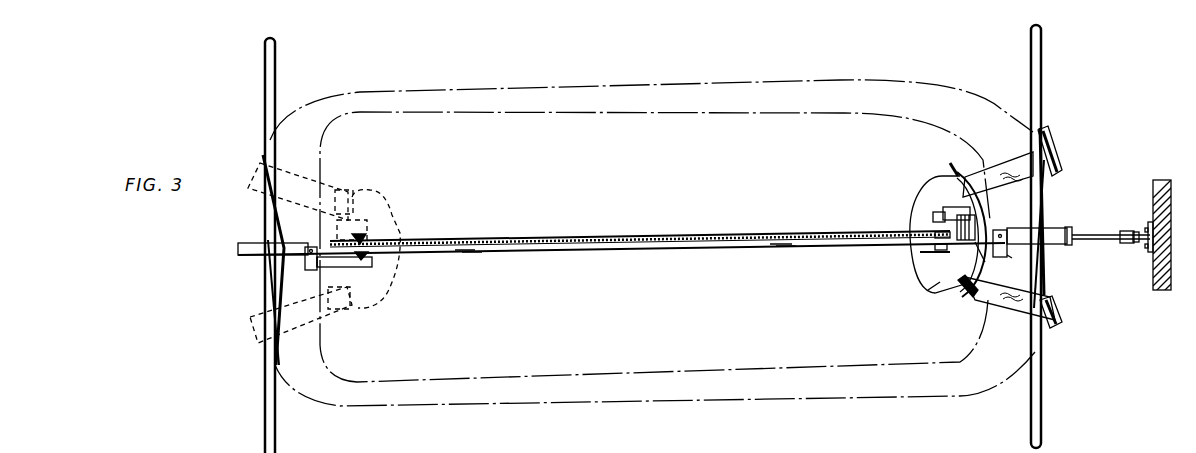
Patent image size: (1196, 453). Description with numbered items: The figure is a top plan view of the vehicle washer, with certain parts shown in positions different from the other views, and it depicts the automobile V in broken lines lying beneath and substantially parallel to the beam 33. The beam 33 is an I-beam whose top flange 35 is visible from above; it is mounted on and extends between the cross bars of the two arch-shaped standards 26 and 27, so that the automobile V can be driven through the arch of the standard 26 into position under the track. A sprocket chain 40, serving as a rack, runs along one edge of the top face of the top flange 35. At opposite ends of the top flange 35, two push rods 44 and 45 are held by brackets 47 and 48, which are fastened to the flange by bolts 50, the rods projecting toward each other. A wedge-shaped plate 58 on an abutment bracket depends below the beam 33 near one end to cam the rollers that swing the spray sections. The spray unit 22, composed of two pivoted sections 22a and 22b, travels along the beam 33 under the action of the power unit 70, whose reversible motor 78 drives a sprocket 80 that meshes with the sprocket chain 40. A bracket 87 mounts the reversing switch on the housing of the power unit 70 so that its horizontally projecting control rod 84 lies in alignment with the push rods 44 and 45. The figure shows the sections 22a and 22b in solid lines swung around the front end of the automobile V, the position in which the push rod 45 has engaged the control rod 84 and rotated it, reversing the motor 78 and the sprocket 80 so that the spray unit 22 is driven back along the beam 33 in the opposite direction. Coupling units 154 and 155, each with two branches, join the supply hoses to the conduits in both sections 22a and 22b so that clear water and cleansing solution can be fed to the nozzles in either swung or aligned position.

The automobile V is at (760, 118).
The spray unit 22 is at (922, 186).
The section of spray unit 22a is at (990, 312).
The section of spray unit 22b is at (1015, 160).
The arch-shaped standard 26 is at (279, 53).
The arch-shaped standard 27 is at (1044, 44).
The beam 33 is at (596, 255).
The top flange 35 is at (250, 252).
The sprocket chain 40 is at (667, 243).
The push rod 44 is at (342, 268).
The push rod 45 is at (980, 263).
The bracket 47 is at (308, 267).
The bracket 48 is at (1008, 254).
The bolt 50 is at (317, 242).
The wedge-shaped plate 58 is at (364, 238).
The power unit 70 is at (922, 286).
The reversible motor 78 is at (968, 211).
The sprocket 80 is at (933, 233).
The control rod 84 is at (932, 257).
The bracket 87 is at (930, 247).
The coupling unit 154 is at (942, 295).
The coupling unit 155 is at (980, 288).